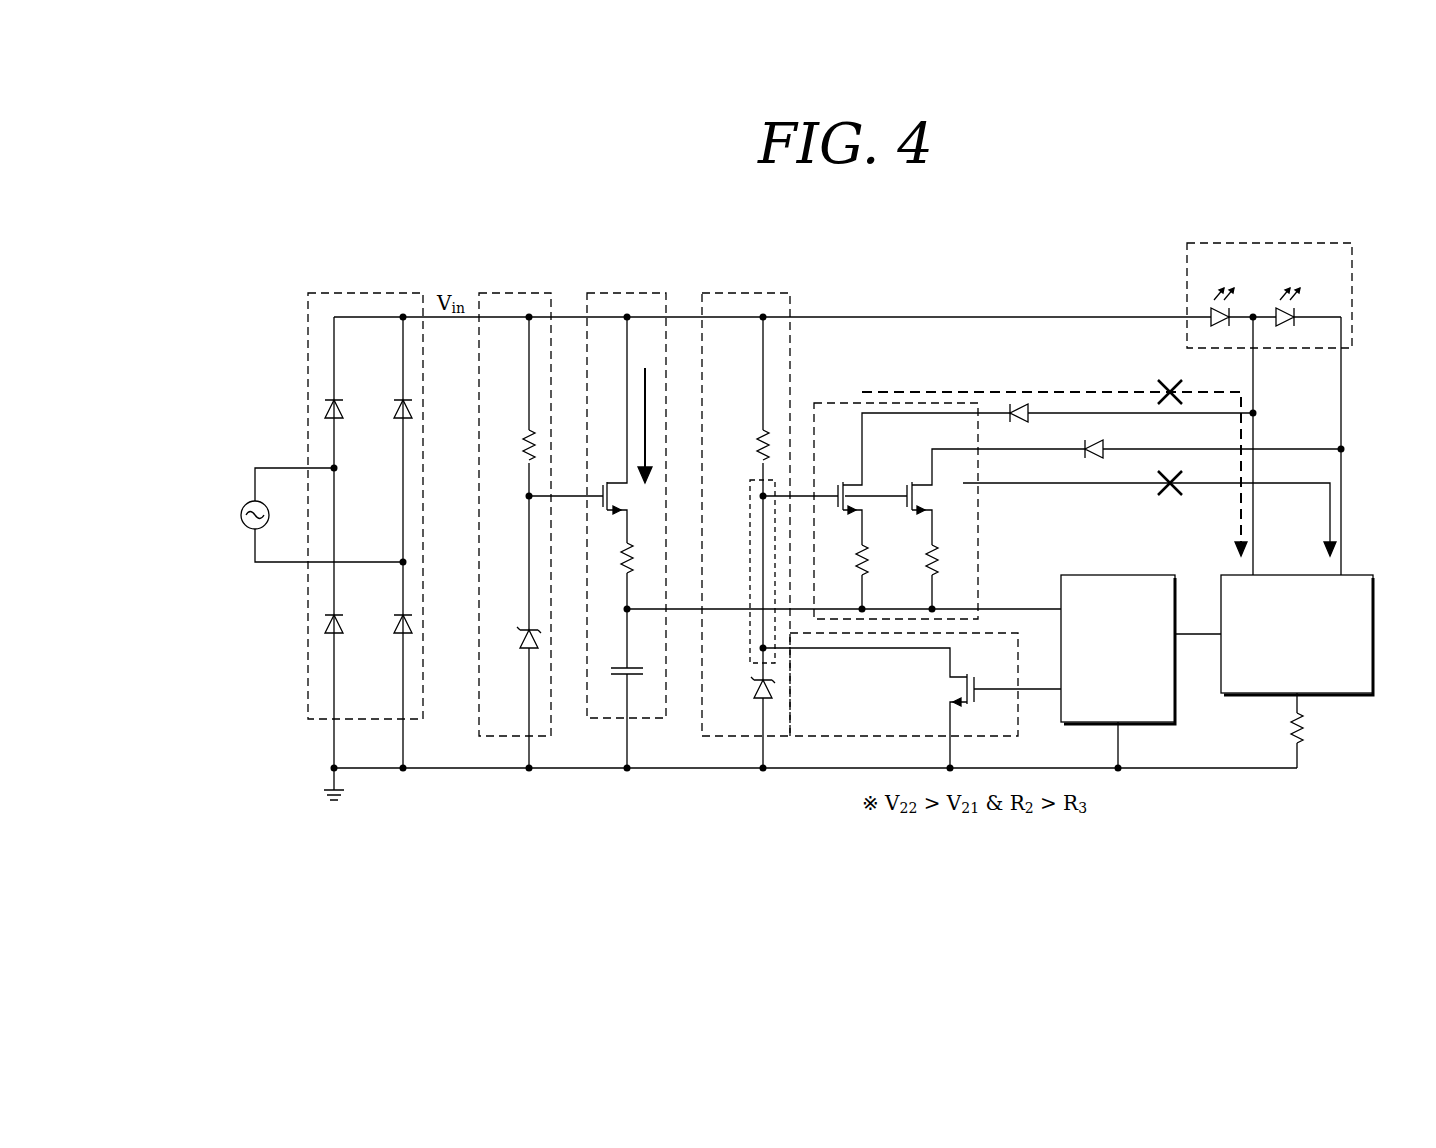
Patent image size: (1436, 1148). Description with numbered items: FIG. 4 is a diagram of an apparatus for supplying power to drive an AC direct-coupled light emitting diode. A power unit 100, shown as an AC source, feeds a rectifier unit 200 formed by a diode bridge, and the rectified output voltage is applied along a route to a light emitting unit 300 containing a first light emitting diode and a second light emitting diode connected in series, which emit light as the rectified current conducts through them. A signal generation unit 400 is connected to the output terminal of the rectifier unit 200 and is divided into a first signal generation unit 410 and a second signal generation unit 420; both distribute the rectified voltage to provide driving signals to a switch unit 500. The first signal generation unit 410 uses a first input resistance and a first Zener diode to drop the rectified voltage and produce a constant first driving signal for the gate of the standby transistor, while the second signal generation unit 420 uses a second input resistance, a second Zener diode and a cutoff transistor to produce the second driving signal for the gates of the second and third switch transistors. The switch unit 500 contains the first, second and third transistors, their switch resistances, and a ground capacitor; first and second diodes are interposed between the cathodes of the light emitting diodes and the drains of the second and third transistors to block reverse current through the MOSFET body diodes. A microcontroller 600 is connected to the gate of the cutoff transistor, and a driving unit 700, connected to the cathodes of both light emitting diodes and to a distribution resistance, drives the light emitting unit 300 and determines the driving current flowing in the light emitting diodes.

The power unit 100 is at (250, 505).
The rectifier unit 200 is at (365, 293).
The light emitting unit 300 is at (1268, 243).
The signal generation unit 400 is at (736, 830).
The first signal generation unit 410 is at (500, 737).
The second signal generation unit 420 is at (720, 737).
The switch unit 500 is at (628, 293).
The microcontroller 600 is at (1141, 671).
The driving unit 700 is at (1297, 671).